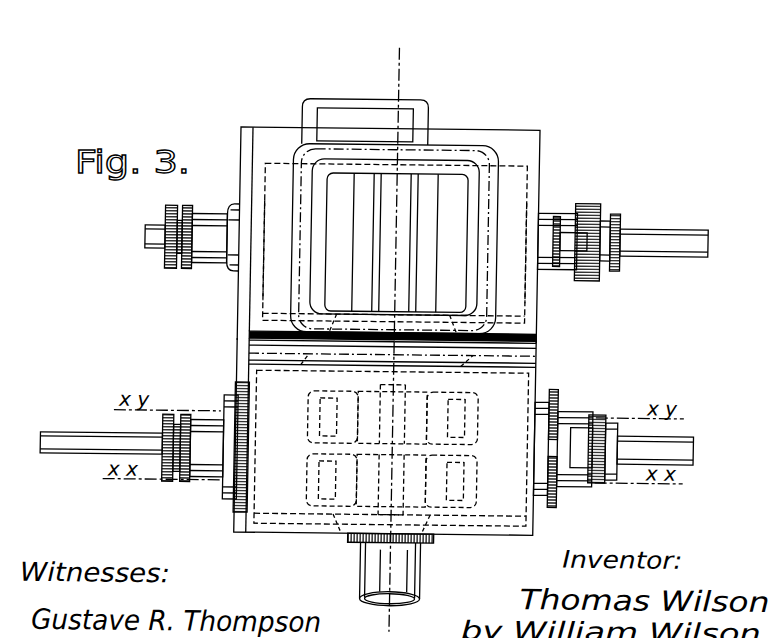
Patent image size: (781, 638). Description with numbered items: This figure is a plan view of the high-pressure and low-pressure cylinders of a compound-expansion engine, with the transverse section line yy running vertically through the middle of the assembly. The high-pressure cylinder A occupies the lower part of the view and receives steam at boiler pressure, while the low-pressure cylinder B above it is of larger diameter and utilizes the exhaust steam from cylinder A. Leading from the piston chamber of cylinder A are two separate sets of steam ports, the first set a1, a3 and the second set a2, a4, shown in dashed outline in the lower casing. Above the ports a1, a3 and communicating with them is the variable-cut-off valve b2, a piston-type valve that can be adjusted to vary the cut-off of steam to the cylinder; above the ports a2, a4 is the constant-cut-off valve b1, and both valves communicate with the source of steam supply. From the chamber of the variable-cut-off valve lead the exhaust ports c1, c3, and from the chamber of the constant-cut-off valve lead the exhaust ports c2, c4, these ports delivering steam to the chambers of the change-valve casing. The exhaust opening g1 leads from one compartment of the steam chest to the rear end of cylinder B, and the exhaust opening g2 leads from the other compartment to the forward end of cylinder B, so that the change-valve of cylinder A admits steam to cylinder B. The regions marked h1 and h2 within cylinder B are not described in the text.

The low-pressure cylinder B is at (540, 166).
The high-pressure cylinder A is at (513, 532).
The left chamber h1 is at (264, 268).
The right chamber h2 is at (526, 266).
The exhaust-opening g1 is at (264, 326).
The exhaust-opening g2 is at (528, 326).
The section line yy y is at (392, 327).
The exhaust-port c1 is at (323, 477).
The exhaust-port c2 is at (323, 417).
The exhaust-port c3 is at (466, 477).
The exhaust-port c4 is at (466, 417).
The constant-cut-off valve b1 is at (405, 403).
The variable-cut-off valve b2 is at (356, 543).
The steam-port a1 is at (370, 484).
The steam-port a2 is at (371, 413).
The steam-port a3 is at (403, 485).
The steam-port a4 is at (404, 414).